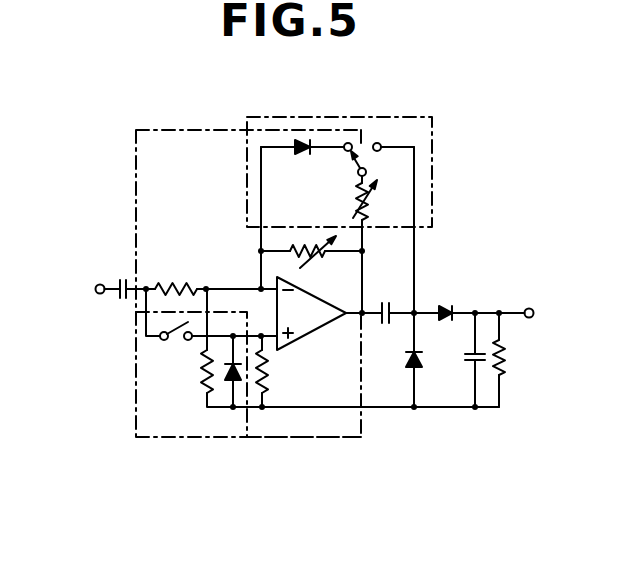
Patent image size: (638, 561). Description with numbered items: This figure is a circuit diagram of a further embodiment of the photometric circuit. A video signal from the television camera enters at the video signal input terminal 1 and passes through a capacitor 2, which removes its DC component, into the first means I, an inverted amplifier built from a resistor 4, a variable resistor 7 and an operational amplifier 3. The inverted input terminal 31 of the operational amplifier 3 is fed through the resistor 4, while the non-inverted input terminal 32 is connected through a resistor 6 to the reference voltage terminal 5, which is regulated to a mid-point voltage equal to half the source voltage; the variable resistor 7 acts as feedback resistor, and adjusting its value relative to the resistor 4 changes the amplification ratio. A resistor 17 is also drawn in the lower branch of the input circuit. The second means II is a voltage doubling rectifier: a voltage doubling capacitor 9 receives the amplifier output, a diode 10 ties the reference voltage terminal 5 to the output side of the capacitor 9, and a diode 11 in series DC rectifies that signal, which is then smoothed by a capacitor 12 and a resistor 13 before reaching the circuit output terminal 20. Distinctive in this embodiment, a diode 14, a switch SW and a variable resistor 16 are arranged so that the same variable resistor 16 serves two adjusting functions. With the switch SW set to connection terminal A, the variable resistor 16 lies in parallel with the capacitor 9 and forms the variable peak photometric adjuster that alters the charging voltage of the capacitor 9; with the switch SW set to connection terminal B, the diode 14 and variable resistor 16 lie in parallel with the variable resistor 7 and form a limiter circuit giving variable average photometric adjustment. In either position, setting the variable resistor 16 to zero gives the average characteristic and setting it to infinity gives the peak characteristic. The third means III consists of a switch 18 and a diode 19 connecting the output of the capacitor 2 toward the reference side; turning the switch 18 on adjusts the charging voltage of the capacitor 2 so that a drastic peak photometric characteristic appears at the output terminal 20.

The video signal input terminal 1 is at (97, 284).
The capacitor 2 is at (121, 281).
The operational amplifier 3 is at (318, 322).
The resistor 4 is at (179, 283).
The reference voltage terminal 5 is at (333, 408).
The resistor 6 is at (270, 378).
The variable resistor 7 is at (310, 256).
The voltage doubling capacitor 9 is at (385, 301).
The diode 10 is at (406, 358).
The diode 11 is at (449, 303).
The capacitor 12 is at (468, 366).
The resistor 13 is at (505, 366).
The diode 14 is at (300, 134).
The variable resistor 16 is at (369, 206).
The resistor 17 is at (202, 372).
The switch 18 is at (173, 341).
The diode 19 is at (227, 392).
The circuit output terminal 20 is at (529, 306).
The inverted input terminal 31 is at (273, 297).
The non-inverted input terminal 32 is at (276, 340).
The first means I is at (178, 146).
The second means II is at (413, 130).
The third means III is at (167, 422).
The connection terminal A is at (377, 136).
The connection terminal B is at (348, 136).
The switch SW is at (375, 157).